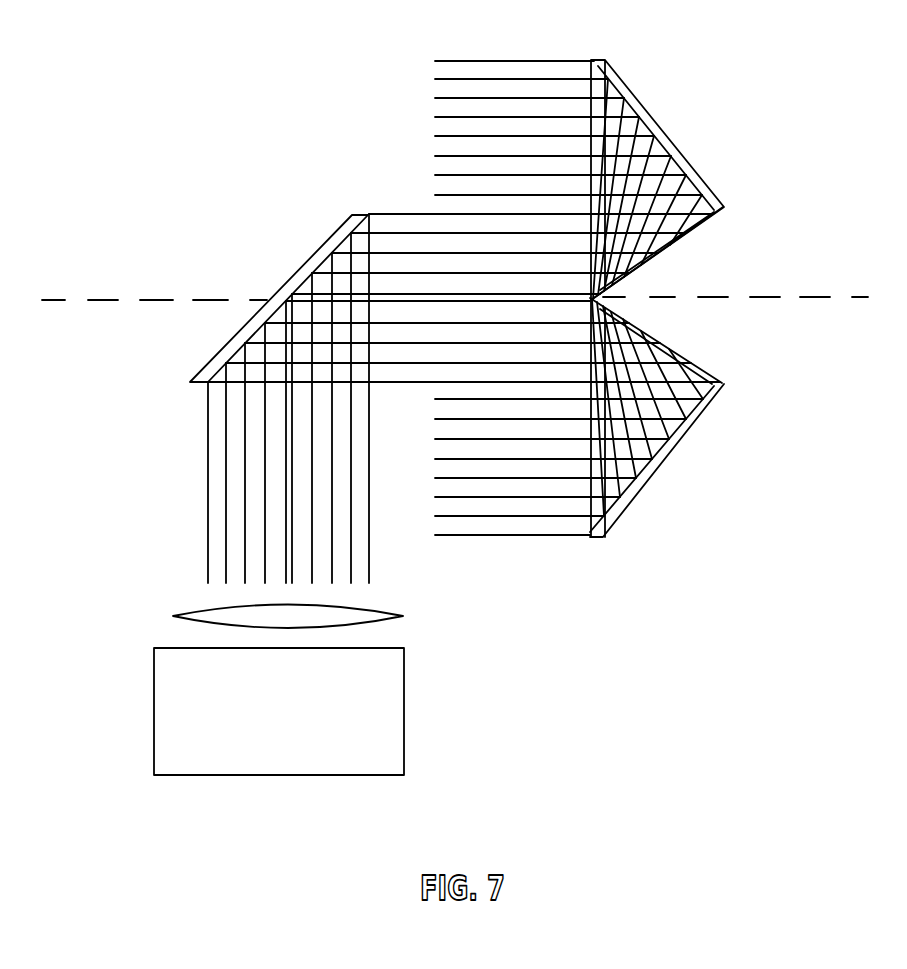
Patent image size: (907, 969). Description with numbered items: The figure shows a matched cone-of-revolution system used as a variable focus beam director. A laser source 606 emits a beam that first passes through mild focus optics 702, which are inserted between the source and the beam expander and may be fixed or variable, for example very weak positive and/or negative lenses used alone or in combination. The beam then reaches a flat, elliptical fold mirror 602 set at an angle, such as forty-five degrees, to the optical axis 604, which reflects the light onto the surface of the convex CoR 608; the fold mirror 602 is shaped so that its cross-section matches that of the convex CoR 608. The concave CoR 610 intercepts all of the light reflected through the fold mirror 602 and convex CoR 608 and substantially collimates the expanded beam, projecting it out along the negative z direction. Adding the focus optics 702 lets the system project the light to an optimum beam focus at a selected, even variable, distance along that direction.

The fold mirror 602 is at (337, 228).
The optical axis 604 is at (155, 300).
The laser source 606 is at (153, 680).
The convex CoR 608 is at (687, 364).
The concave CoR 610 is at (642, 483).
The mild focus optics 702 is at (403, 610).